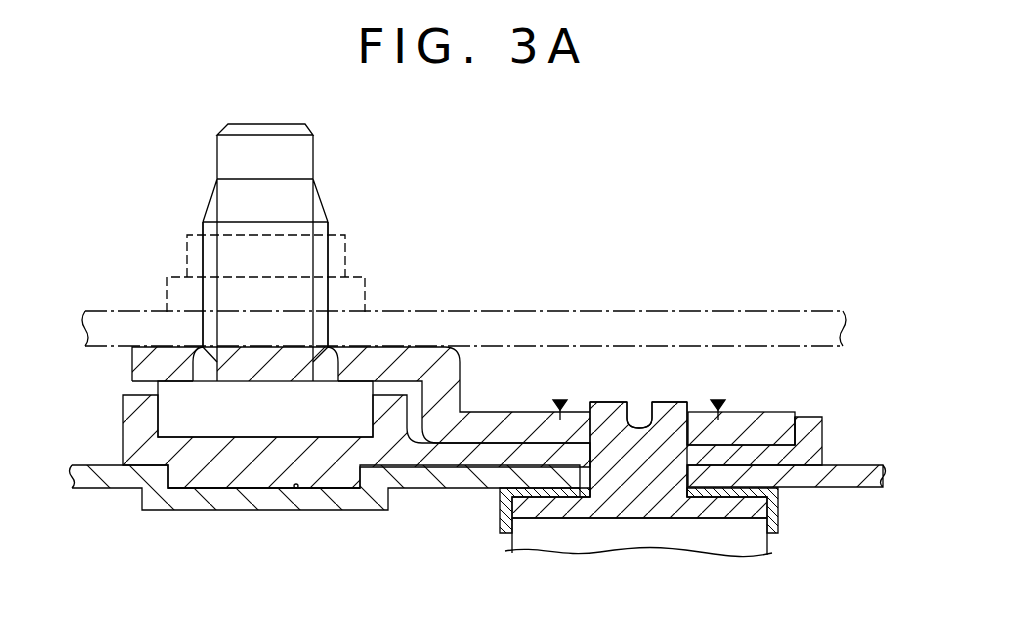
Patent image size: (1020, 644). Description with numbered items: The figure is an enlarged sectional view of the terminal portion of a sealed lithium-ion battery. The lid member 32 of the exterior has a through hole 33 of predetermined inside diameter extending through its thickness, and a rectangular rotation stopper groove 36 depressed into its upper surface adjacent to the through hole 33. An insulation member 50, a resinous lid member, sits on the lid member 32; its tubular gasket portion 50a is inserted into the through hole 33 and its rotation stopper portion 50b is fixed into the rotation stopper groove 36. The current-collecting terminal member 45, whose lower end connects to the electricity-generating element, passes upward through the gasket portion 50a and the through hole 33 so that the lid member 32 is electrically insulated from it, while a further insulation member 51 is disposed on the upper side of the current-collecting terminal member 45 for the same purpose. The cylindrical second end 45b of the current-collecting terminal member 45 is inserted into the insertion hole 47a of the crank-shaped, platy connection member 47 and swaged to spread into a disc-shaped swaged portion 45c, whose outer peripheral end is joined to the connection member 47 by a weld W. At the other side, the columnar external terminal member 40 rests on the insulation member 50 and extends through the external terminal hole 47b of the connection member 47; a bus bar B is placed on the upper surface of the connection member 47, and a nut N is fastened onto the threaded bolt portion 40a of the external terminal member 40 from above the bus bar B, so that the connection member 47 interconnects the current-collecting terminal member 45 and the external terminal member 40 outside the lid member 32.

The external terminal member 40 is at (227, 155).
The bolt portion 40a is at (323, 228).
The external terminal hole 47b is at (200, 350).
The nut N is at (367, 290).
The connection member 47 is at (438, 388).
The bus bar B is at (552, 325).
The weld W is at (557, 400).
The swaged portion 45c is at (578, 407).
The second end 45b is at (640, 407).
The insertion hole 47a is at (687, 402).
The insulation member 50 is at (123, 450).
The lid member 32 is at (160, 500).
The rotation stopper portion 50b is at (255, 480).
The rotation stopper groove 36 is at (297, 488).
The insulation member 51 is at (500, 510).
The tubular gasket portion 50a is at (580, 497).
The through hole 33 is at (697, 495).
The current-collecting terminal member 45 is at (752, 545).